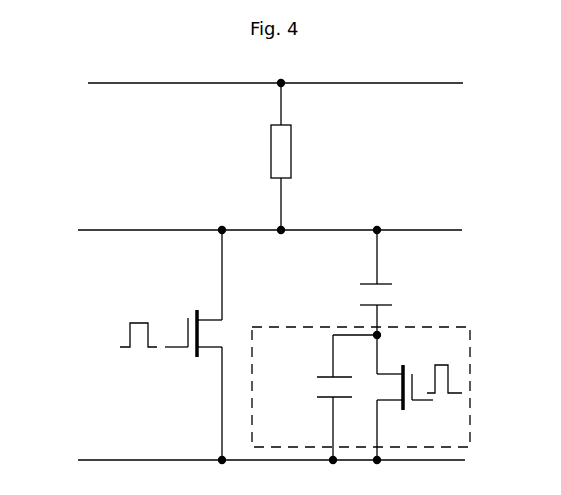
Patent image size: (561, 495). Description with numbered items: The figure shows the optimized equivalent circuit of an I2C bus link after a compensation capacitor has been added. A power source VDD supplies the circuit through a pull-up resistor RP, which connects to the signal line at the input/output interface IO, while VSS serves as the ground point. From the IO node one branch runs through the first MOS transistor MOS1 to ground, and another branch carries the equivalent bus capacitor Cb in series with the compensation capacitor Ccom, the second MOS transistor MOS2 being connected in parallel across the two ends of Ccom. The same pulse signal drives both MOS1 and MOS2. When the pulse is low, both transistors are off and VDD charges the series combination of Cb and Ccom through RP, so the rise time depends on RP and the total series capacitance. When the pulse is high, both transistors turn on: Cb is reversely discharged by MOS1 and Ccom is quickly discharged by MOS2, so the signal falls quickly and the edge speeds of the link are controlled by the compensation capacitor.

The power source VDD is at (275, 99).
The ground point VSS is at (271, 448).
The pull-up resistor RP is at (264, 155).
The input/output interface IO is at (295, 220).
The first MOS transistor MOS1 is at (173, 345).
The equivalent capacitor Cb is at (394, 283).
The compensation capacitor Ccom is at (319, 399).
The second MOS transistor MOS2 is at (418, 399).